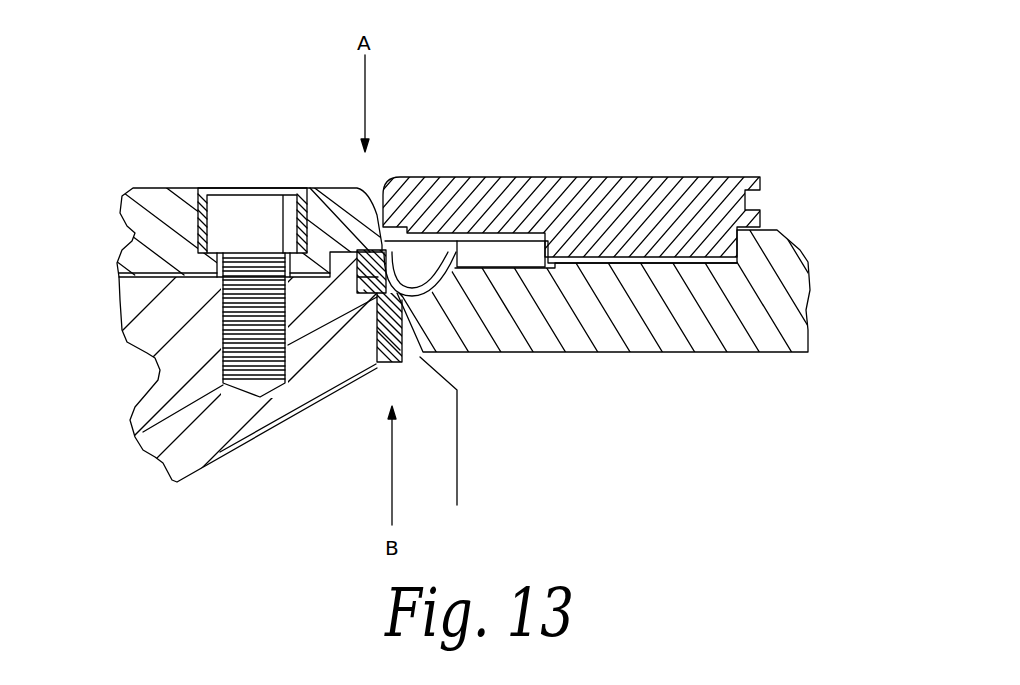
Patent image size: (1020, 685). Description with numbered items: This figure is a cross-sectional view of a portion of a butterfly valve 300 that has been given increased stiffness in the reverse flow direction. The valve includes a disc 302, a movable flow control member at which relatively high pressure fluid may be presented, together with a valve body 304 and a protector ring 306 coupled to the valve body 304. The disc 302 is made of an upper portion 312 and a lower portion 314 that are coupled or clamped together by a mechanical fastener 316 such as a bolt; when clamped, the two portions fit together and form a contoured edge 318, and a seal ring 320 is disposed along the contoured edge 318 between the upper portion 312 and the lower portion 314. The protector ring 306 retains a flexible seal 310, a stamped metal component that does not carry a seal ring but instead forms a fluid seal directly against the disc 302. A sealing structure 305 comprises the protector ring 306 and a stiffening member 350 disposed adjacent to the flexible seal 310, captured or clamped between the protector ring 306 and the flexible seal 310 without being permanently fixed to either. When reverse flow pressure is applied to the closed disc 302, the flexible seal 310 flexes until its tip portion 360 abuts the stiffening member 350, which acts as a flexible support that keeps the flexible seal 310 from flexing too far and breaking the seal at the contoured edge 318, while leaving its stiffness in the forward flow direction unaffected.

The butterfly valve 300 is at (152, 72).
The disc 302 is at (140, 350).
The valve body 304 is at (731, 402).
The sealing structure 305 is at (630, 170).
The protector ring 306 is at (525, 177).
The flexible seal 310 is at (420, 272).
The upper portion 312 is at (147, 214).
The lower portion 314 is at (200, 452).
The mechanical fastener 316 is at (243, 222).
The contoured edge 318 is at (365, 182).
The seal ring 320 is at (377, 353).
The stiffening member 350 is at (490, 177).
The tip portion 360 is at (418, 177).